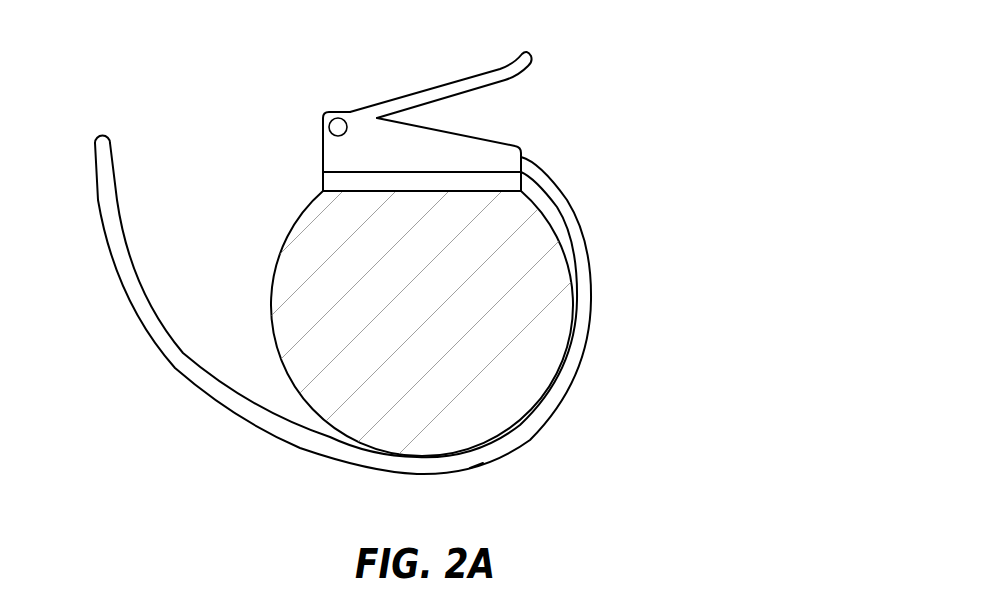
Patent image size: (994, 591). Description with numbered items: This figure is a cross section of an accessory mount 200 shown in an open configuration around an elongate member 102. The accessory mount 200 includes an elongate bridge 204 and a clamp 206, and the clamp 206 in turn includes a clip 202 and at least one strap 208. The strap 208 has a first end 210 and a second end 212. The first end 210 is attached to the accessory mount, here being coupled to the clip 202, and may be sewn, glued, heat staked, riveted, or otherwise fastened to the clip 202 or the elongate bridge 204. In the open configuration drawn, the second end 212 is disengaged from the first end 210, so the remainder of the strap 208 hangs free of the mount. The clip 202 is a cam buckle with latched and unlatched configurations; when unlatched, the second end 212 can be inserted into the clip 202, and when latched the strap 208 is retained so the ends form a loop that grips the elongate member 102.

The accessory mount 200 is at (594, 34).
The elongate member 102 is at (282, 250).
The clip 202 is at (422, 90).
The elongate bridge 204 is at (322, 192).
The clamp 206 is at (603, 266).
The strap 208 is at (483, 462).
The first end 210 is at (512, 158).
The second end 212 is at (103, 137).